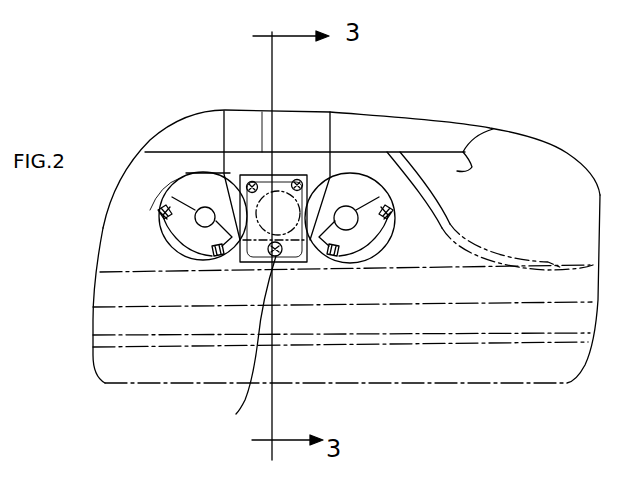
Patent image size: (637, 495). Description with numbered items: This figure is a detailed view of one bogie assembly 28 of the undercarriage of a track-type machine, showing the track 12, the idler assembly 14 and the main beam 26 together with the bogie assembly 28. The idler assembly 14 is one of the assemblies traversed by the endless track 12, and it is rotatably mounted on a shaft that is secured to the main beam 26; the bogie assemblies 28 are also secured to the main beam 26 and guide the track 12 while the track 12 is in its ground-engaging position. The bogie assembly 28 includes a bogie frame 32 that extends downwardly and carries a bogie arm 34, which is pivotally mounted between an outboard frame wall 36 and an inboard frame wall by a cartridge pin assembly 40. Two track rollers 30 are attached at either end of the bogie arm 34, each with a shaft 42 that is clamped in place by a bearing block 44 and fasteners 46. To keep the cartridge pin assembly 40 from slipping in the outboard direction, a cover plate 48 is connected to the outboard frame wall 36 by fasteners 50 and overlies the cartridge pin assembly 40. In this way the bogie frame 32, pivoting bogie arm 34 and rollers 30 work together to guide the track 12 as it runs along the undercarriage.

The track 12 is at (582, 316).
The idler assembly 14 is at (582, 223).
The main beam 26 is at (490, 199).
The bogie assembly 28 is at (282, 254).
The track roller 30 is at (215, 260).
The bogie frame 32 is at (297, 167).
The bogie arm 34 is at (190, 188).
The outboard frame wall 36 is at (291, 262).
The cartridge pin assembly 40 is at (256, 263).
The shaft 42 is at (205, 212).
The bearing block 44 is at (168, 203).
The fasteners 46 is at (160, 220).
The cover plate 48 is at (274, 122).
The fasteners 50 is at (255, 182).